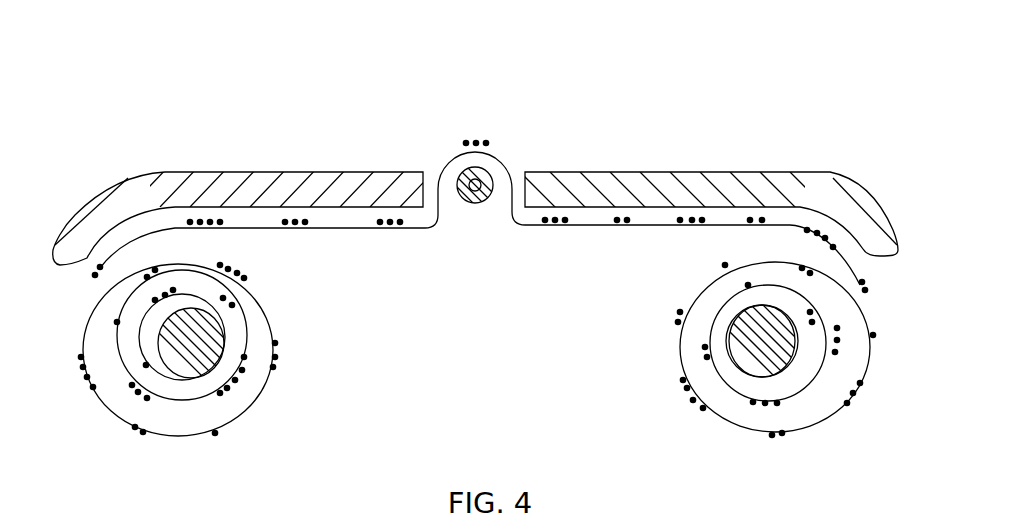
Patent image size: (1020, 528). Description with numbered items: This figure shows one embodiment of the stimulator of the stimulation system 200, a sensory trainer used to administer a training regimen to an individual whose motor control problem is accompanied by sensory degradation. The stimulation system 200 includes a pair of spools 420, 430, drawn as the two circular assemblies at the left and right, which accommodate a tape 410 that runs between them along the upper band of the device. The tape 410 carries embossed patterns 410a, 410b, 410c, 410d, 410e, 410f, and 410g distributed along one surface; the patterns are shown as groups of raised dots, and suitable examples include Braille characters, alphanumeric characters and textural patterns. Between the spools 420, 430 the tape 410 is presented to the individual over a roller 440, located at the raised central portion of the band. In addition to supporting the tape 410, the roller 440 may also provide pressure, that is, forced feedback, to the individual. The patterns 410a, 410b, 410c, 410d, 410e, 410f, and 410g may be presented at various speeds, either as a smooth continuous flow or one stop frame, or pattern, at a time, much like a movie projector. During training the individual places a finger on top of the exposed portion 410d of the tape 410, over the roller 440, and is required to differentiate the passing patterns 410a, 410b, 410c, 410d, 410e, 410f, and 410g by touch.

The stimulation system 200 is at (308, 84).
The tape 410 is at (270, 323).
The embossed pattern 410a is at (203, 214).
The embossed pattern 410b is at (305, 226).
The embossed pattern 410c is at (398, 226).
The embossed pattern 410d is at (474, 140).
The embossed pattern 410e is at (557, 224).
The embossed pattern 410f is at (622, 224).
The embossed pattern 410g is at (690, 216).
The spool 420 is at (763, 340).
The spool 430 is at (192, 340).
The roller 440 is at (490, 200).